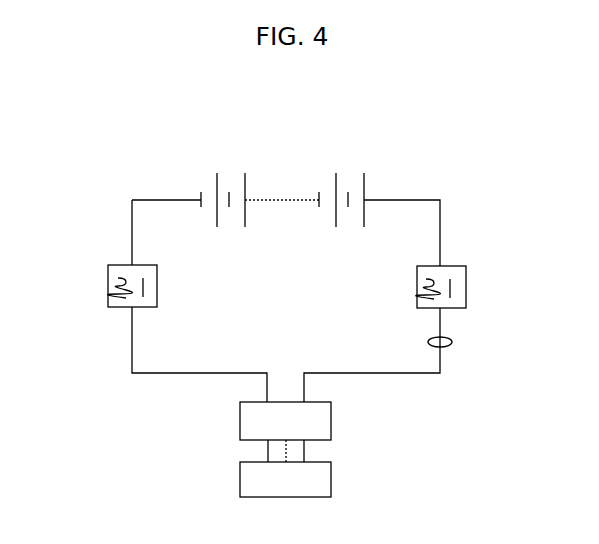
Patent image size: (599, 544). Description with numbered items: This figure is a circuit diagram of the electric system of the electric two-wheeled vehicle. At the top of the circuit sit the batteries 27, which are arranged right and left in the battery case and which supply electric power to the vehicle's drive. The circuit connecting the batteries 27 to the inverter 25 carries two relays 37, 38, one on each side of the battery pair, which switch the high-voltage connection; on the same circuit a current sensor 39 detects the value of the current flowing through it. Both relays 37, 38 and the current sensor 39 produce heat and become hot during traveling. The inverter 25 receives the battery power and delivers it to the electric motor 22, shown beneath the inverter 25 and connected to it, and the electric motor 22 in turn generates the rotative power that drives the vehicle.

The batteries 27 is at (287, 178).
The relay 38 is at (108, 290).
The relay 37 is at (466, 286).
The current sensor 39 is at (452, 341).
The inverter 25 is at (331, 418).
The electric motor 22 is at (331, 478).